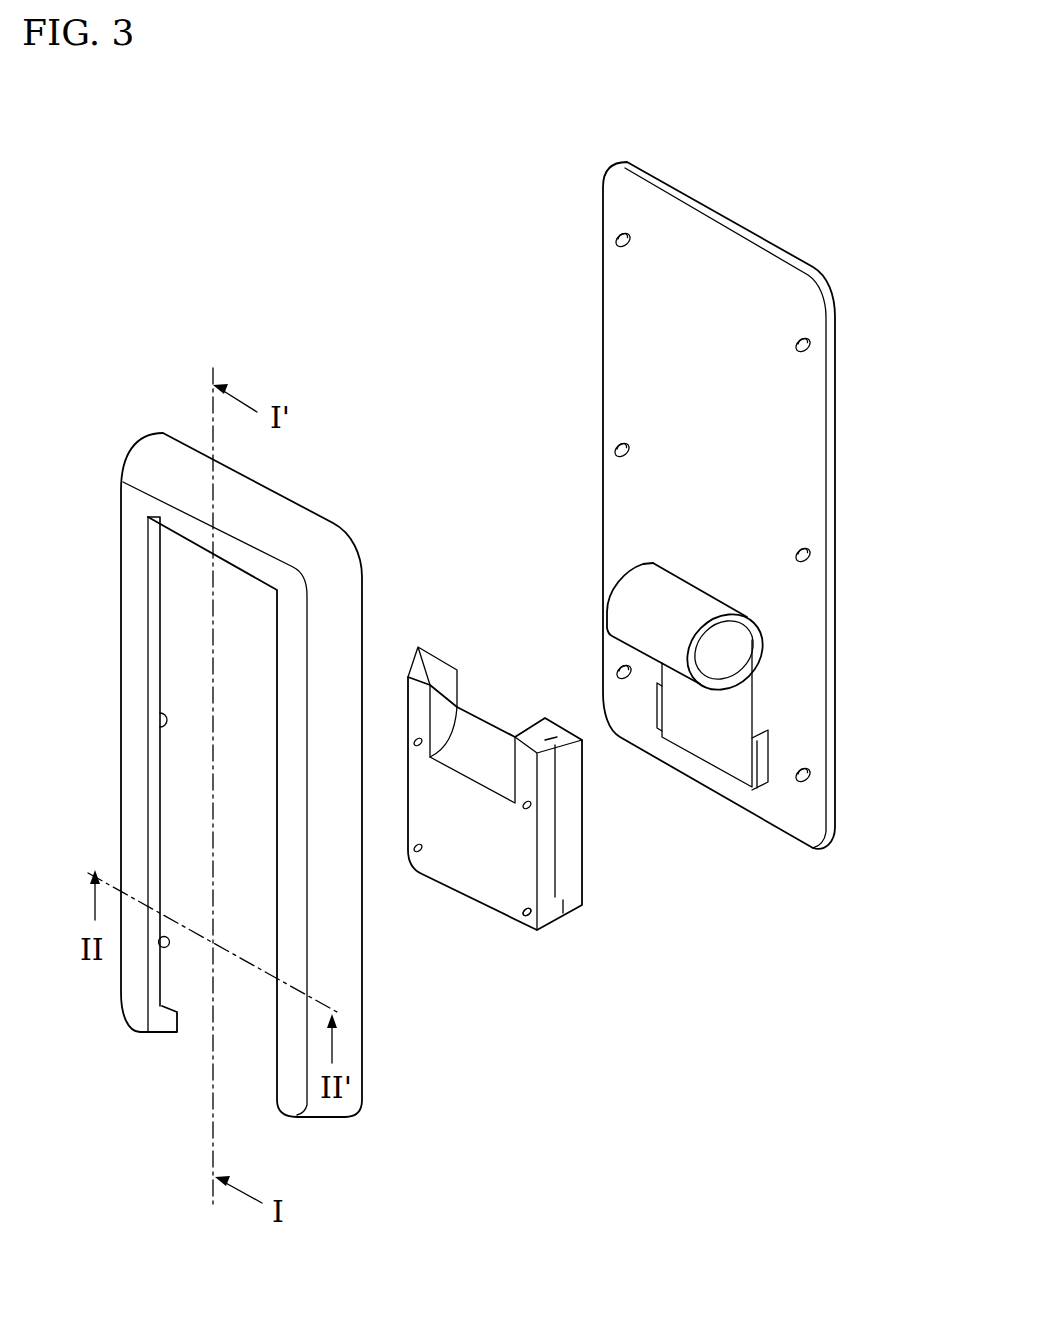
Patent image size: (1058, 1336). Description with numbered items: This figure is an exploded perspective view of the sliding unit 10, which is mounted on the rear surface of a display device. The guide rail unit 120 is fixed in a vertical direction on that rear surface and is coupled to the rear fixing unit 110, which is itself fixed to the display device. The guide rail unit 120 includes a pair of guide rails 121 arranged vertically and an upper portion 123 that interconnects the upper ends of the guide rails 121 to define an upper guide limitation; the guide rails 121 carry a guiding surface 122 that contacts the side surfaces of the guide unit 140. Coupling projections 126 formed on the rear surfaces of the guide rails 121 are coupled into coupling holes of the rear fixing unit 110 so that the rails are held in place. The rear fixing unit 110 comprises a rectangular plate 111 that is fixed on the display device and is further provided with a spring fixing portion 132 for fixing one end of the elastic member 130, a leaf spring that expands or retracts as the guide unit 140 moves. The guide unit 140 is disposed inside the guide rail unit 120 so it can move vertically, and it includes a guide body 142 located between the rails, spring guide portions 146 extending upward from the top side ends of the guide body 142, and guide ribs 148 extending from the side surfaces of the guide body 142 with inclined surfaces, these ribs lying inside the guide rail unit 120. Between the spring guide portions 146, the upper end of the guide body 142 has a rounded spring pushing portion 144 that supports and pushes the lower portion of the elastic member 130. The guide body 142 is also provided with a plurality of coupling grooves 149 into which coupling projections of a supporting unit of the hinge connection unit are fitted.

The hinge assembly 10 is at (203, 222).
The rear fixing unit 110 is at (715, 543).
The rectangular plate 111 is at (630, 352).
The guide rail unit 120 is at (196, 756).
The guide rails 121 is at (138, 720).
The guiding surface 122 is at (154, 805).
The upper portion 123 is at (280, 515).
The coupling projections 126 is at (168, 947).
The elastic member 130 is at (699, 744).
The spring fixing portion 132 is at (760, 767).
The guide unit 140 is at (531, 763).
The guide body 142 is at (467, 870).
The spring pushing portion 144 is at (482, 758).
The spring guide portions 146 is at (537, 733).
The guide ribs 148 is at (575, 843).
The coupling grooves 149 is at (523, 913).